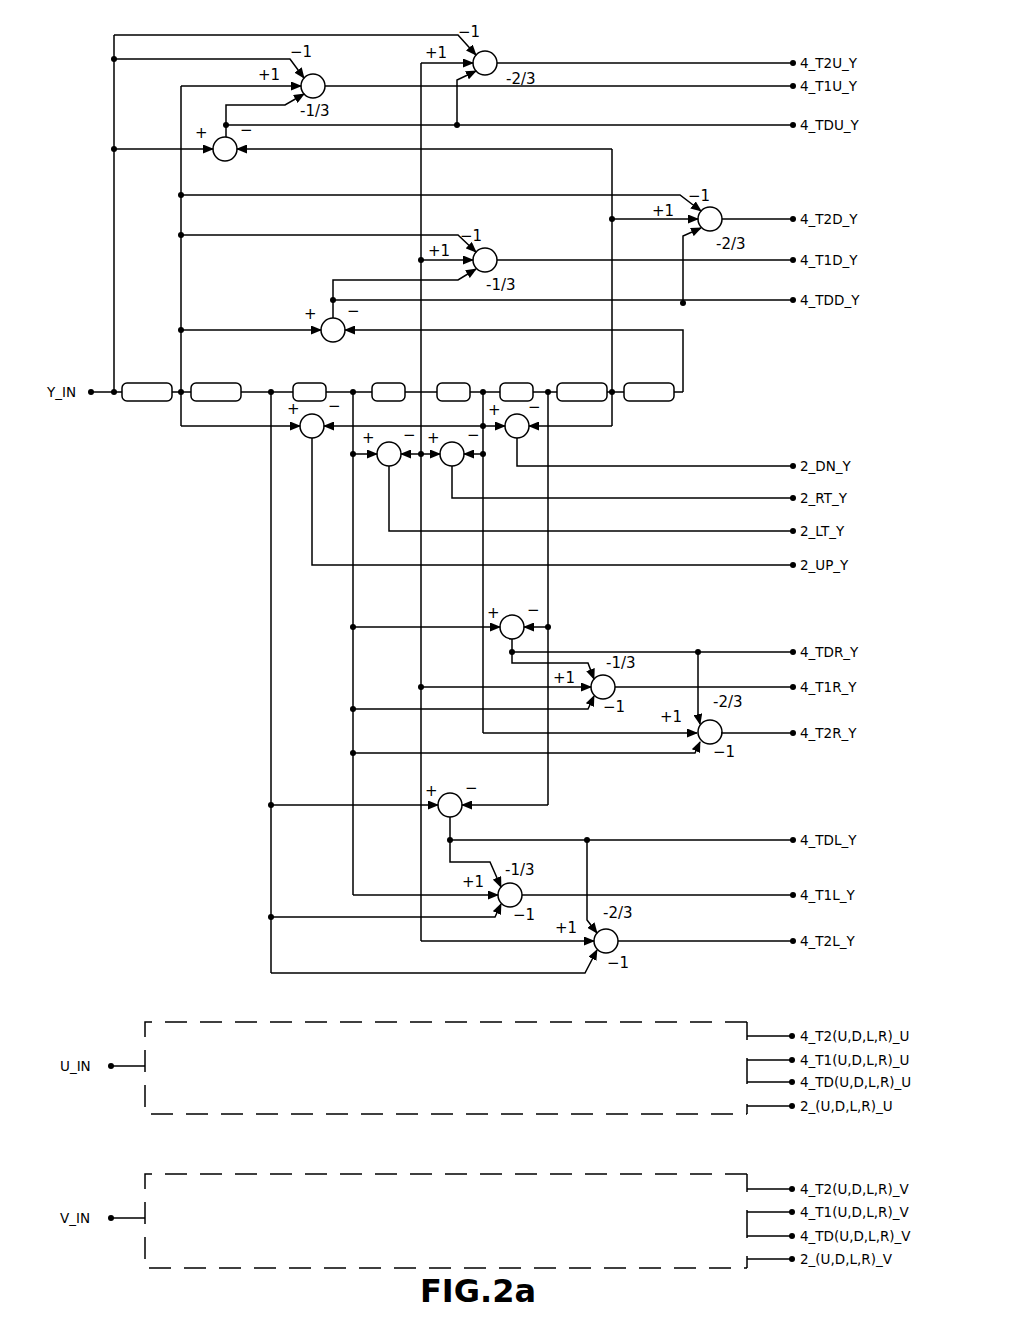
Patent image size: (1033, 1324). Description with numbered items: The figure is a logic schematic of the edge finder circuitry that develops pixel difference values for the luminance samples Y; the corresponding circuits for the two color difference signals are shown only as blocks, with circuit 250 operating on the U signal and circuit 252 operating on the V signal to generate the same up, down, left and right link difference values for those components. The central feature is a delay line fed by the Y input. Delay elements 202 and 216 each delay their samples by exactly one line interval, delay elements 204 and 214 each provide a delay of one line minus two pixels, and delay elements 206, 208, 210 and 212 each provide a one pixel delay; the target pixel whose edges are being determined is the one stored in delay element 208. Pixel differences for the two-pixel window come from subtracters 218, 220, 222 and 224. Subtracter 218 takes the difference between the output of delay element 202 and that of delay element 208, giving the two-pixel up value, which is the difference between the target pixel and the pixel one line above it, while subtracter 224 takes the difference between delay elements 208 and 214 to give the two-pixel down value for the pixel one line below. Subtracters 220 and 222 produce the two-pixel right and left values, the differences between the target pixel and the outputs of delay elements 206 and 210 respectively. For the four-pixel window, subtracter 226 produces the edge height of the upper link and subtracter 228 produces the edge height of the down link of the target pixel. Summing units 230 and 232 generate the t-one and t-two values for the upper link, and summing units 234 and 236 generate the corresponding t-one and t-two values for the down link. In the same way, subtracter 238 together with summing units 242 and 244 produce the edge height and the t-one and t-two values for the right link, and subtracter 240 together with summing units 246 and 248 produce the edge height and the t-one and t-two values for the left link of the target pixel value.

The delay element 202 is at (158, 401).
The delay element 204 is at (225, 401).
The delay element 206 is at (300, 383).
The delay element 208 is at (390, 383).
The delay element 210 is at (452, 383).
The delay element 212 is at (515, 383).
The delay element 214 is at (580, 383).
The delay element 216 is at (648, 383).
The subtracter 218 is at (300, 433).
The subtracter 220 is at (400, 462).
The subtracter 222 is at (462, 463).
The subtracter 224 is at (528, 434).
The subtracter 226 is at (234, 158).
The subtracter 228 is at (331, 318).
The summing unit 230 is at (325, 90).
The summing unit 232 is at (497, 58).
The summing unit 234 is at (497, 256).
The summing unit 236 is at (721, 213).
The subtracter 238 is at (503, 638).
The subtracter 240 is at (452, 793).
The summing unit 242 is at (615, 682).
The summing unit 244 is at (722, 727).
The summing unit 246 is at (522, 890).
The summing unit 248 is at (618, 936).
The circuit 250 is at (235, 1022).
The circuit 252 is at (268, 1138).